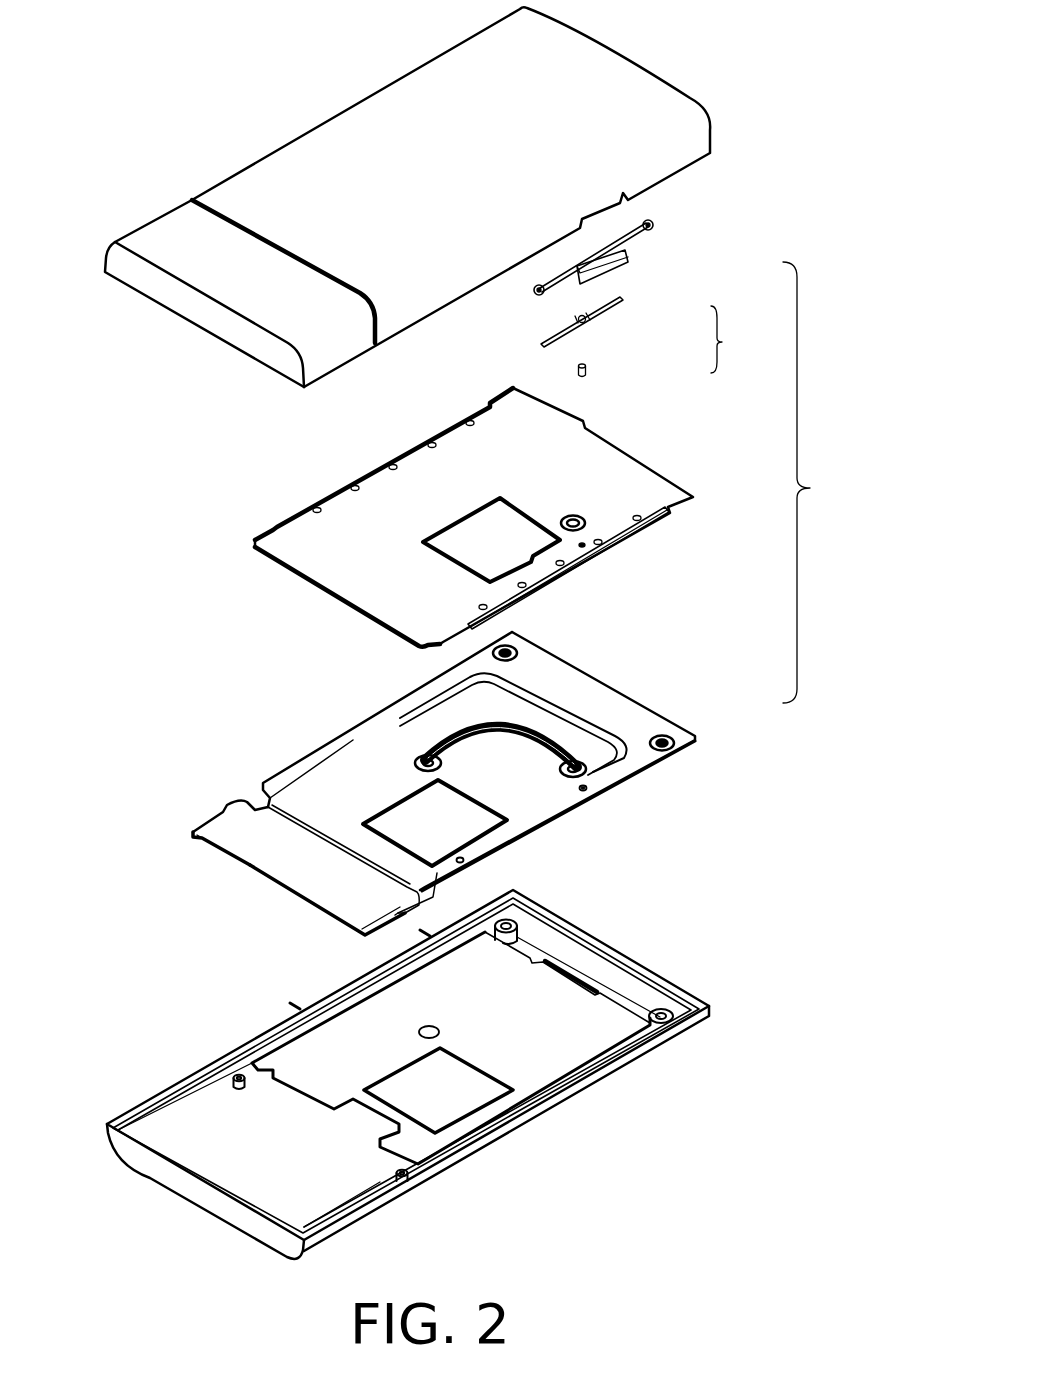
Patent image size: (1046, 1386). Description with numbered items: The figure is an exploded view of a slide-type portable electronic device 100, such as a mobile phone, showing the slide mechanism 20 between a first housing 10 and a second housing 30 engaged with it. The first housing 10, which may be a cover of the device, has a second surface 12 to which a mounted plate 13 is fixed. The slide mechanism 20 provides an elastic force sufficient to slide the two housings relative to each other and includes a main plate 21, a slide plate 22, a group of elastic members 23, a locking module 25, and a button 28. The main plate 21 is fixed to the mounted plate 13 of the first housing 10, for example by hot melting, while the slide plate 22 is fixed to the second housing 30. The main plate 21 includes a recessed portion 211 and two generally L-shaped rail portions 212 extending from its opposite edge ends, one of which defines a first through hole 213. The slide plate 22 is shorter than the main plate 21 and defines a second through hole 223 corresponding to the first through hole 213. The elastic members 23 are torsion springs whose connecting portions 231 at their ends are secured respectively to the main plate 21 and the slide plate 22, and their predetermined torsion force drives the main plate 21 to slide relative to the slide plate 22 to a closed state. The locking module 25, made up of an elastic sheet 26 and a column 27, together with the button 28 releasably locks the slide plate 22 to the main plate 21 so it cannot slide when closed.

The portable electronic device 100 is at (146, 44).
The second housing 30 is at (642, 47).
The slide mechanism 20 is at (817, 482).
The button 28 is at (642, 240).
The locking module 25 is at (737, 339).
The elastic sheet 26 is at (615, 307).
The column 27 is at (588, 367).
The slide plate 22 is at (592, 458).
The second through hole 223 is at (583, 556).
The main plate 21 is at (635, 720).
The elastic members 23 is at (530, 730).
The connecting portions 231 is at (573, 780).
The recessed portion 211 is at (372, 767).
The rail portions 212 is at (283, 777).
The first through hole 213 is at (573, 805).
The first housing 10 is at (641, 934).
The second surface 12 is at (234, 1163).
The mounted plate 13 is at (539, 1044).